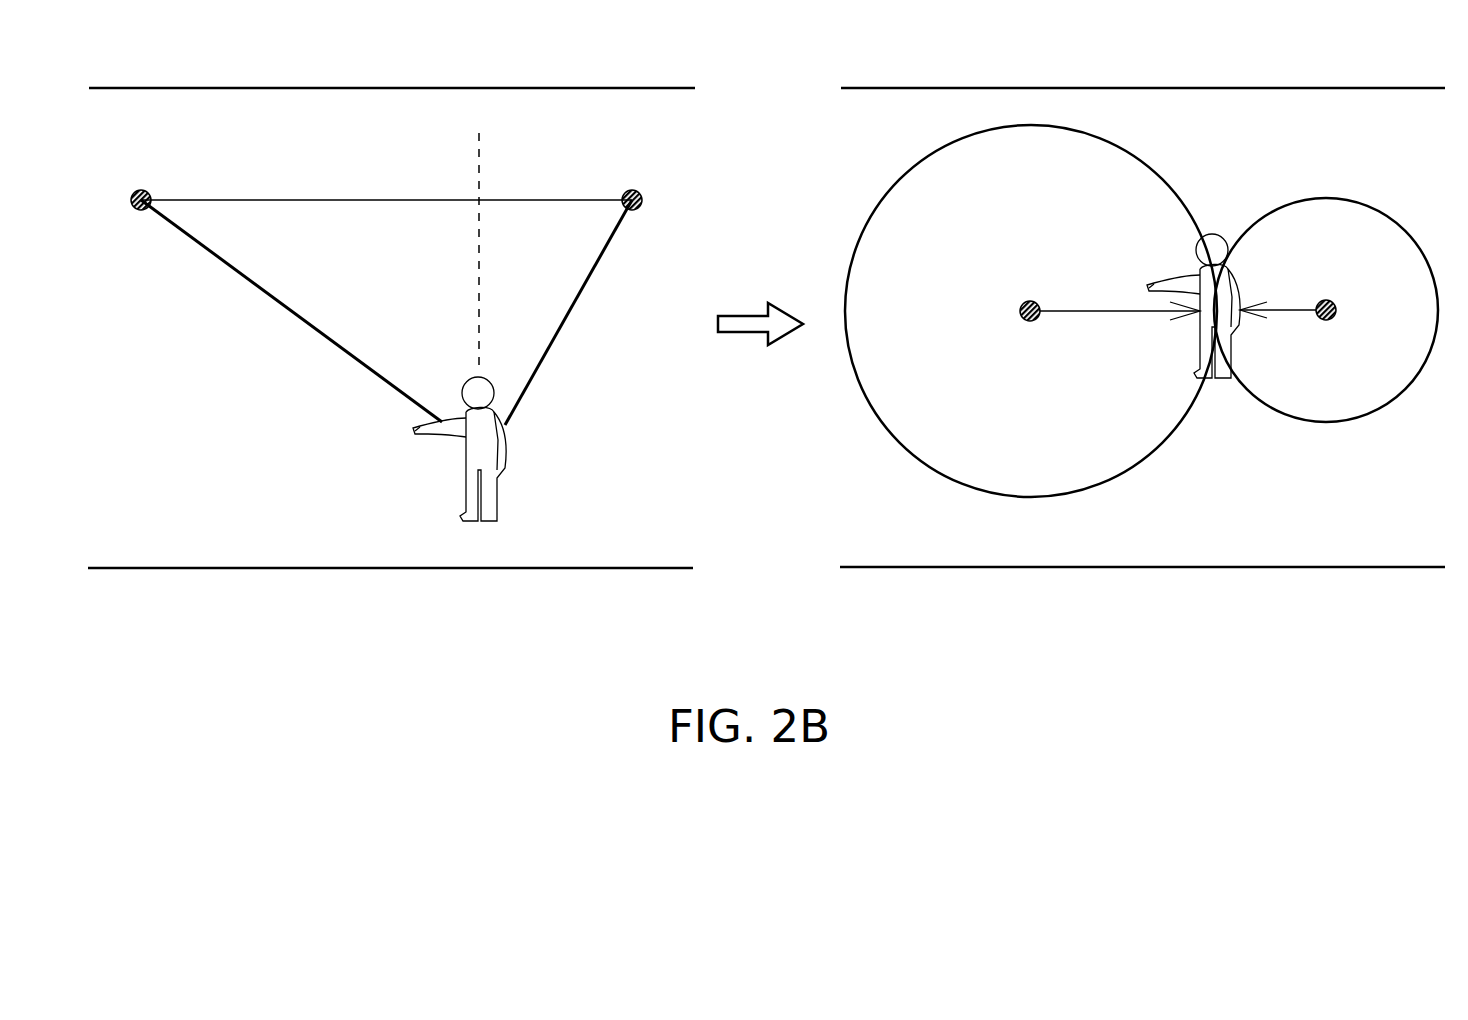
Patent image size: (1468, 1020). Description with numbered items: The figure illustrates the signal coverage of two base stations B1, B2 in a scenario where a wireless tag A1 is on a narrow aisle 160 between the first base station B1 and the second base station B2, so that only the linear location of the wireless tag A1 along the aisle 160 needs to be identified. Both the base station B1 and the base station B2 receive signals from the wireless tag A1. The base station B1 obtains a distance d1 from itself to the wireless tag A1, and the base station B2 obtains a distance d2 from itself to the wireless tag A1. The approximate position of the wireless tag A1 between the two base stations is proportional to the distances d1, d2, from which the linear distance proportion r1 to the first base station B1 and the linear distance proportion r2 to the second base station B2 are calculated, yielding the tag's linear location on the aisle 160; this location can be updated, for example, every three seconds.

The aisle 160 is at (418, 110).
The first base station B1 is at (668, 311).
The second base station B2 is at (1029, 291).
The wireless tag A1 is at (826, 380).
The linear distance proportion to the first base station r1 is at (310, 183).
The linear distance proportion to the second base station r2 is at (555, 183).
The distance from base station B1 to the wireless tag d1 is at (291, 311).
The distance from base station B2 to the wireless tag d2 is at (568, 312).